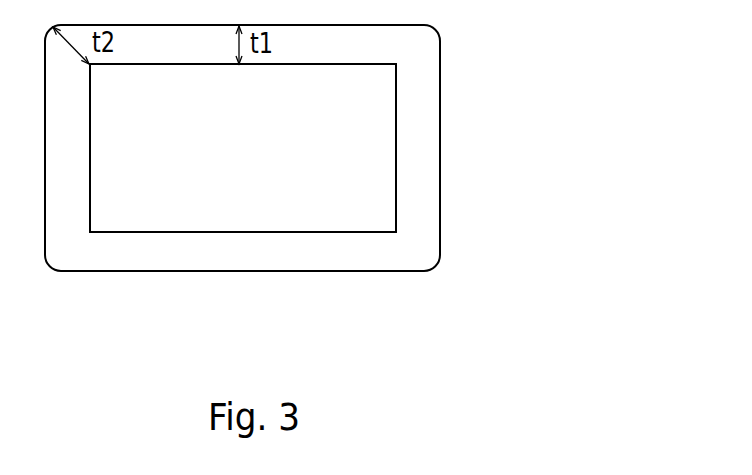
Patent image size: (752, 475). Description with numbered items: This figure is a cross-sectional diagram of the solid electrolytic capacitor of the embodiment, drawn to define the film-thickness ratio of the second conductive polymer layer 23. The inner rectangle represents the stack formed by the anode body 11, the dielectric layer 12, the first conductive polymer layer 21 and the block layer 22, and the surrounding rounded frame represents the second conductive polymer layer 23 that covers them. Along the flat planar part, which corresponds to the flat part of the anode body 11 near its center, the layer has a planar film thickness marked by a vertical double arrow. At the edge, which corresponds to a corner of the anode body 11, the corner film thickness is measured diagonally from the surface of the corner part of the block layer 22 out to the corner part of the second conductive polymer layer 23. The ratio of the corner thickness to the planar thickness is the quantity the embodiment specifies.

The second conductive polymer layer 23 is at (432, 72).
The anode body 11 is at (392, 134).
The dielectric layer 12 is at (243, 148).
The first conductive polymer layer 21 is at (243, 148).
The block layer 22 is at (243, 148).